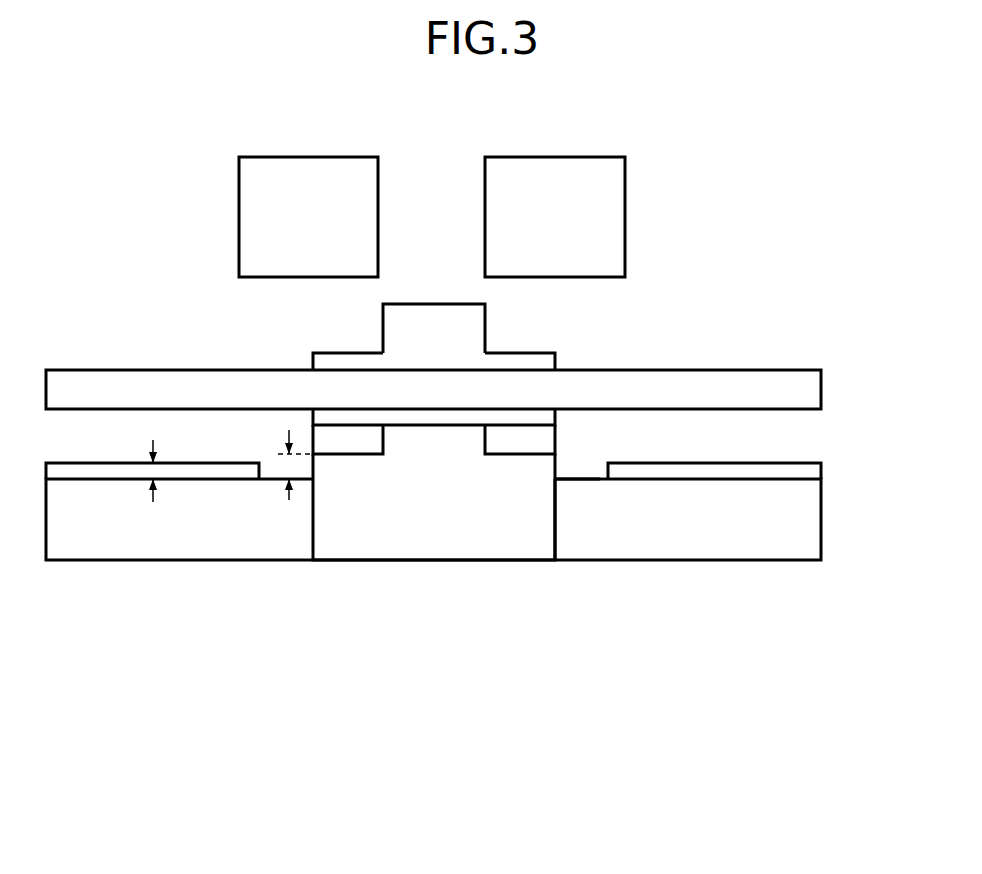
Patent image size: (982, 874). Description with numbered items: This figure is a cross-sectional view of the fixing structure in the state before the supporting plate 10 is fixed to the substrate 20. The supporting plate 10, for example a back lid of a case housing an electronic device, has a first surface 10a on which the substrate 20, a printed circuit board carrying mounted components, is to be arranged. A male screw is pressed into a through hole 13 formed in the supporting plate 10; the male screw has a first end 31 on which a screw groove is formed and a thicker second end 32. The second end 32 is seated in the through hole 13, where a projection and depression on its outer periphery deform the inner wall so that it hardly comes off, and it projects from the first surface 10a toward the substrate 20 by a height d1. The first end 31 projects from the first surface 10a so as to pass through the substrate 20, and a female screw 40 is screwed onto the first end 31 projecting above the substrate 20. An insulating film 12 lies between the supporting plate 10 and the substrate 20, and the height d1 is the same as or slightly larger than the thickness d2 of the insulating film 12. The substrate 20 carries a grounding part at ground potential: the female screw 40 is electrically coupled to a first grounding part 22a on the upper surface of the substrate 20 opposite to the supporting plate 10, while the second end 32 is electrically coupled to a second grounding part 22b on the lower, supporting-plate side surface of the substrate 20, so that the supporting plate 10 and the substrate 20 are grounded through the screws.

The supporting plate 10 is at (807, 521).
The first surface 10a is at (587, 475).
The insulating film 12 is at (807, 471).
The through hole 13 is at (555, 517).
The substrate 20 is at (807, 389).
The first grounding part 22a is at (530, 362).
The second grounding part 22b is at (515, 418).
The first end 31 is at (435, 312).
The second end 32 is at (371, 545).
The female screw 40 is at (239, 218).
The height d1 is at (287, 463).
The thickness d2 is at (152, 463).